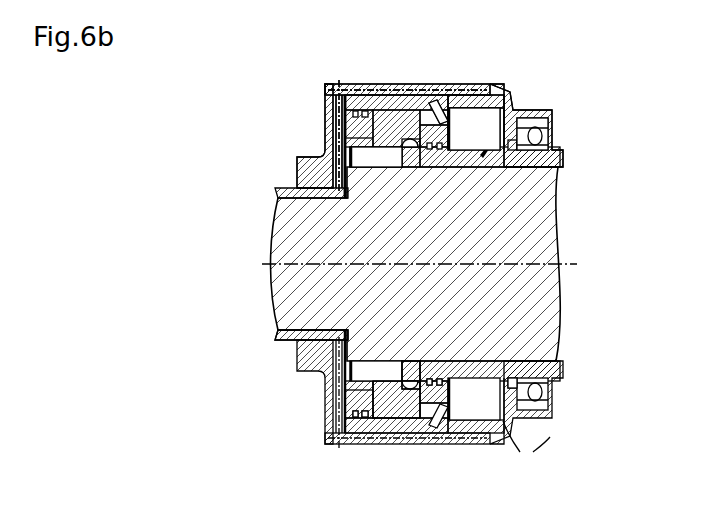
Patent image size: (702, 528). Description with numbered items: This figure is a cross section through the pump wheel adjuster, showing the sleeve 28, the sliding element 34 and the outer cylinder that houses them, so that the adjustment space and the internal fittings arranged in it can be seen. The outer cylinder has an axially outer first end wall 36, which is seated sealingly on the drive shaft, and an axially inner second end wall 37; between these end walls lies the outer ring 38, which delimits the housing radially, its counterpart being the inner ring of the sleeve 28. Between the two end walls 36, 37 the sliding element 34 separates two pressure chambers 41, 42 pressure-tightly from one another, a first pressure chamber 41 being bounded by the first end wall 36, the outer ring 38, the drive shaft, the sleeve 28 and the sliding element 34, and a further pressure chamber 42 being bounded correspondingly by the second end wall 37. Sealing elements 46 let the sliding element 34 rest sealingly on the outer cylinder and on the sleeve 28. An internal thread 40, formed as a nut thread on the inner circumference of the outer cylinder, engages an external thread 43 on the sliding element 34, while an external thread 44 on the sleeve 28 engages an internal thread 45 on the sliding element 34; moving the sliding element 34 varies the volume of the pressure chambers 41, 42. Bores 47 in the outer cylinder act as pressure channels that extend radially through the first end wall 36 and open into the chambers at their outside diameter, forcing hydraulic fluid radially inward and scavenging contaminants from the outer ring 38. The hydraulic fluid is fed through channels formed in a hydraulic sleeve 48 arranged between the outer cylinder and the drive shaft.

The sleeve 28 is at (515, 107).
The sliding element 34 is at (387, 402).
The first end wall 36 is at (328, 132).
The second end wall 37 is at (528, 438).
The outer ring 38 is at (358, 92).
The internal thread 40 is at (455, 100).
The first pressure chamber 41 is at (380, 157).
The further pressure chamber 42 is at (481, 123).
The external thread 43 is at (436, 108).
The external thread 44 is at (412, 140).
The internal thread 45 is at (410, 390).
The sealing elements 46 is at (362, 440).
The bores 47 is at (327, 92).
The hydraulic sleeve 48 is at (300, 334).